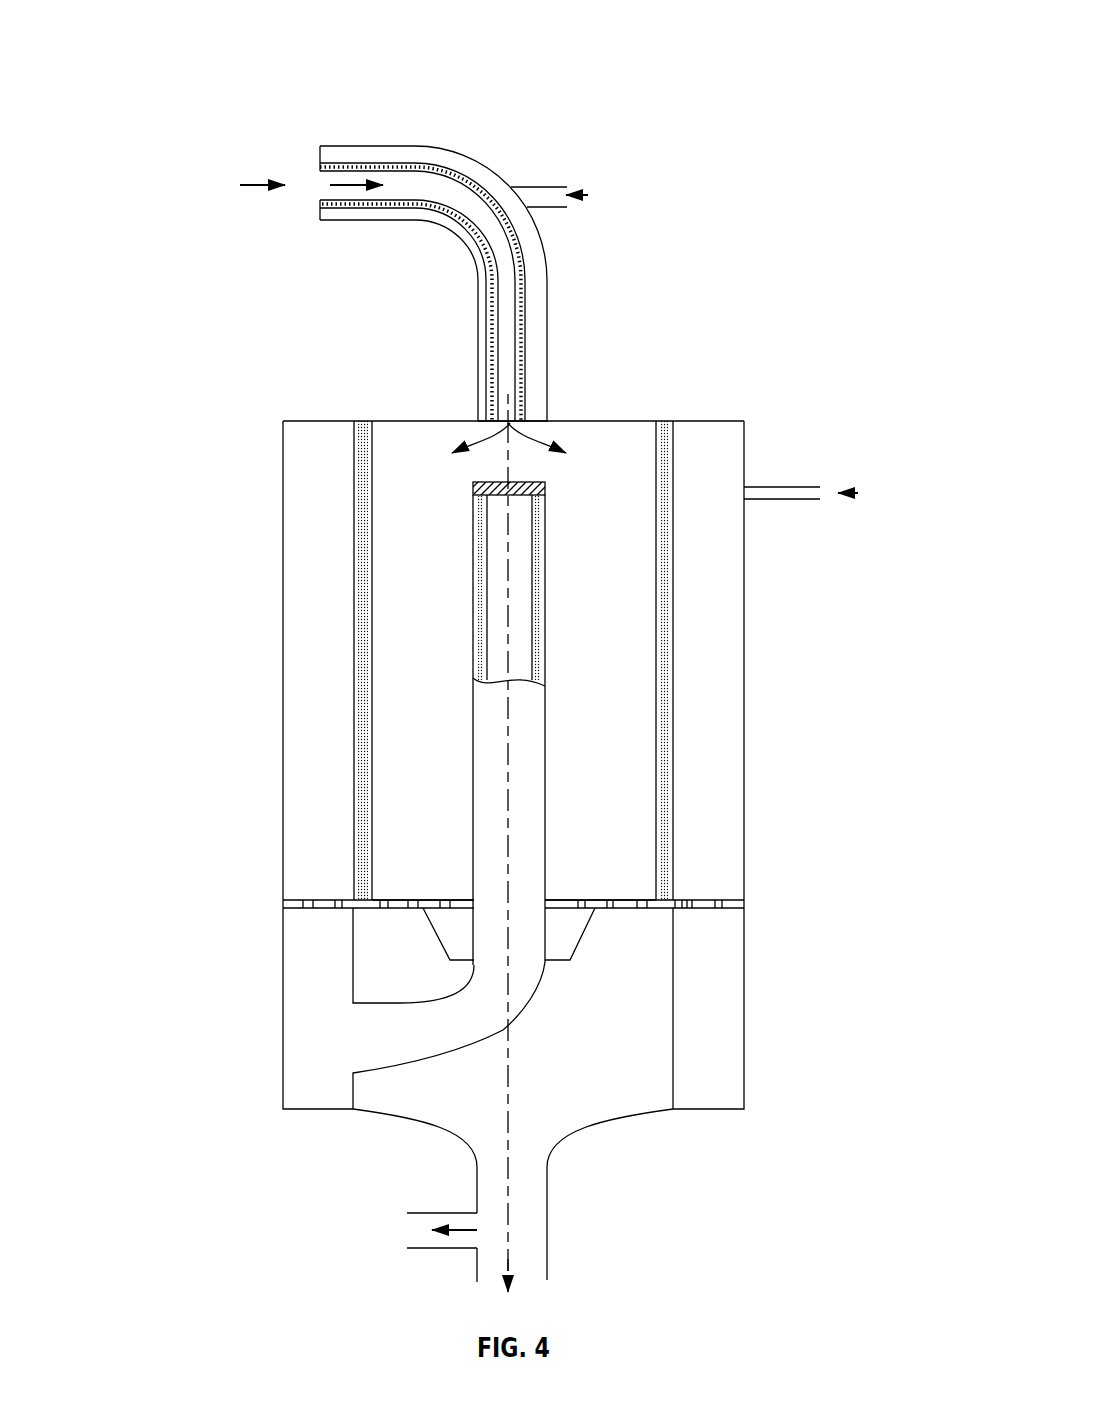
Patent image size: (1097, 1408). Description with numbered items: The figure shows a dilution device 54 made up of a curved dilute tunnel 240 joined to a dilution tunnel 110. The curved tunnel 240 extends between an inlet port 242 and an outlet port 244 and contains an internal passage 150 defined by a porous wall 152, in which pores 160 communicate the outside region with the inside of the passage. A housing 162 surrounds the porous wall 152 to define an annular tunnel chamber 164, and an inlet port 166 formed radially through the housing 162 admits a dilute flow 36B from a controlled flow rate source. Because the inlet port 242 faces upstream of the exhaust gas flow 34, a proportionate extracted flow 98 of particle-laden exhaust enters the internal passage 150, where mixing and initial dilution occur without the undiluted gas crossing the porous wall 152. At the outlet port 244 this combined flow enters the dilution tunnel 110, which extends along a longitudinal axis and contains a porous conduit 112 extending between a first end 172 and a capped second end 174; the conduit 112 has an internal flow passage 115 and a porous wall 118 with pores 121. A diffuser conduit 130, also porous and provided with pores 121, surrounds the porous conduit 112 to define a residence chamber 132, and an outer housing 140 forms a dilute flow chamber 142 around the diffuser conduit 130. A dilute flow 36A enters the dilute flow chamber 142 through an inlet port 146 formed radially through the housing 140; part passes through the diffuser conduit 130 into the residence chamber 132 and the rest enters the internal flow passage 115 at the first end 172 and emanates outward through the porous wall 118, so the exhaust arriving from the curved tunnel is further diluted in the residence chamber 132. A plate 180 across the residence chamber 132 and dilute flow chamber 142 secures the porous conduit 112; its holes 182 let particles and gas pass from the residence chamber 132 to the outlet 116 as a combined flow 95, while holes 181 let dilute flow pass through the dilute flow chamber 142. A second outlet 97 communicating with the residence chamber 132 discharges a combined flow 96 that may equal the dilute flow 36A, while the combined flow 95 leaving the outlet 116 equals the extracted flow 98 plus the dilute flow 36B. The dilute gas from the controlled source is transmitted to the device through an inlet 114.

The dilution device 54 is at (654, 56).
The dilute tunnel 240 is at (347, 108).
The tunnel chamber 164 is at (417, 155).
The inlet port 166 is at (508, 187).
The pores 160 is at (525, 270).
The porous wall 152 is at (486, 288).
The inlet port 242 is at (320, 210).
The housing 162 is at (410, 222).
The internal passage 150 is at (512, 351).
The extracted flow 98 is at (340, 185).
The exhaust gas flow 34 is at (246, 185).
The dilute flow 36B is at (574, 197).
The outlet port 244 is at (495, 419).
The dilution tunnel 110 is at (268, 400).
The housing 140 is at (282, 554).
The dilute flow chamber 142 is at (307, 748).
The diffuser conduit 130 is at (674, 583).
The pores 121 is at (540, 653).
The residence chamber 132 is at (617, 677).
The porous conduit 112 is at (745, 488).
The inlet port 146 is at (786, 487).
The dilute flow 36A is at (870, 495).
The inlet 114 is at (520, 482).
The porous wall 118 is at (545, 560).
The internal flow passage 115 is at (497, 567).
The second end 174 is at (523, 522).
The plate 180 is at (702, 908).
The holes 181 is at (730, 902).
The holes 182 is at (607, 903).
The first end 172 is at (358, 1040).
The outlet 116 is at (547, 1280).
The combined flow 95 is at (510, 1265).
The combined flow 96 is at (445, 1226).
The second outlet 97 is at (443, 1249).